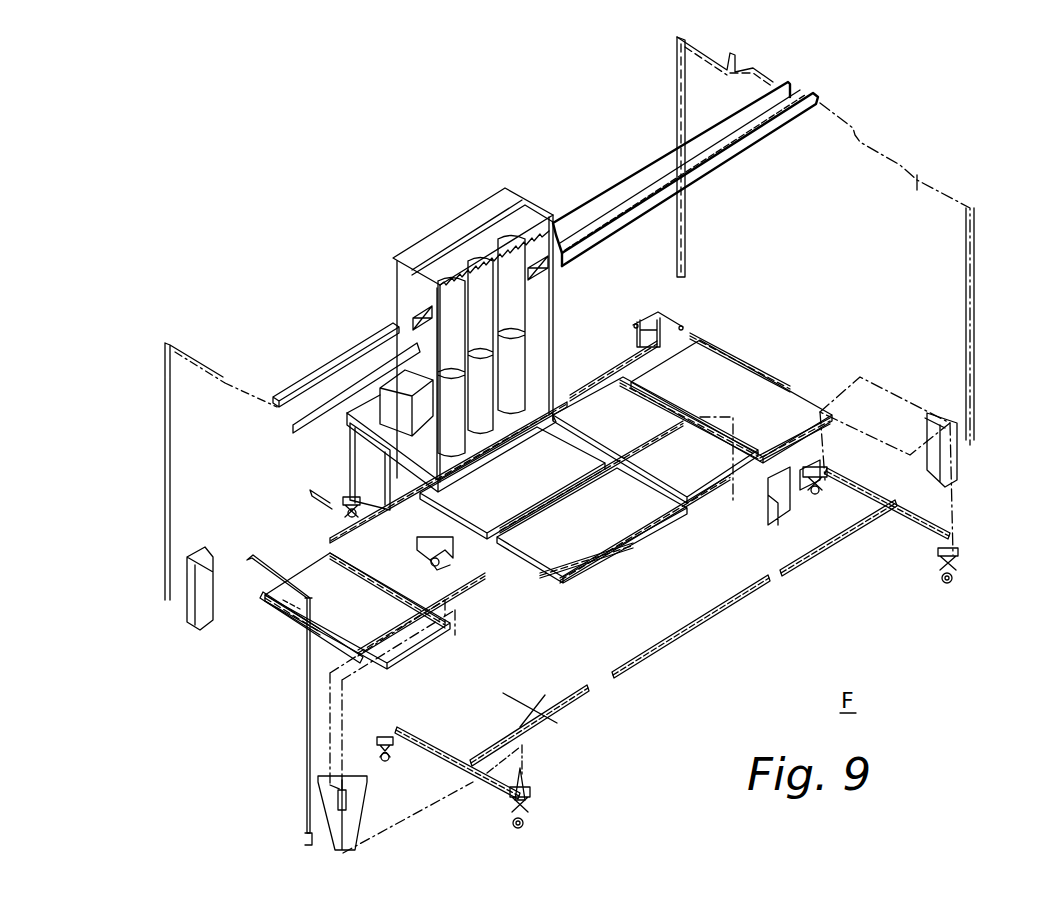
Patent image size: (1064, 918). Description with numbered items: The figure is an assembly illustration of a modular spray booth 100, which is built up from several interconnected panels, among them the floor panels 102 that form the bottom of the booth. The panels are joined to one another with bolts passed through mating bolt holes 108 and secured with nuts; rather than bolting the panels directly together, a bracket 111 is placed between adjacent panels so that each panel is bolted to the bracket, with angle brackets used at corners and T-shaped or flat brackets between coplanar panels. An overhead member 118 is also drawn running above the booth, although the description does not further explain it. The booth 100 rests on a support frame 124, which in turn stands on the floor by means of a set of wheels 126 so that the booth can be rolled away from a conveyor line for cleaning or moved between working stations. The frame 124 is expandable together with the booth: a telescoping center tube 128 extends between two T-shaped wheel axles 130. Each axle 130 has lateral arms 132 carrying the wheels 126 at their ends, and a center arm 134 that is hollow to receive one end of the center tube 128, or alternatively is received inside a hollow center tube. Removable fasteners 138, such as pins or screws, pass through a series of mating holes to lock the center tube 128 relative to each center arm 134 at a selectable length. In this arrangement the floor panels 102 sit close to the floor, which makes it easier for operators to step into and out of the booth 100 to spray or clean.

The modular spray booth 100 is at (291, 201).
The floor panel 102 is at (702, 358).
The bolt hole 108 is at (262, 600).
The bracket 111 is at (680, 112).
The overhead beam 118 is at (780, 100).
The support frame 124 is at (806, 604).
The wheel 126 is at (950, 578).
The telescoping center tube 128 is at (680, 630).
The T-shaped wheel axle 130 is at (427, 753).
The lateral arm 132 is at (520, 758).
The center arm 134 is at (577, 700).
The removable fastener 138 is at (528, 707).